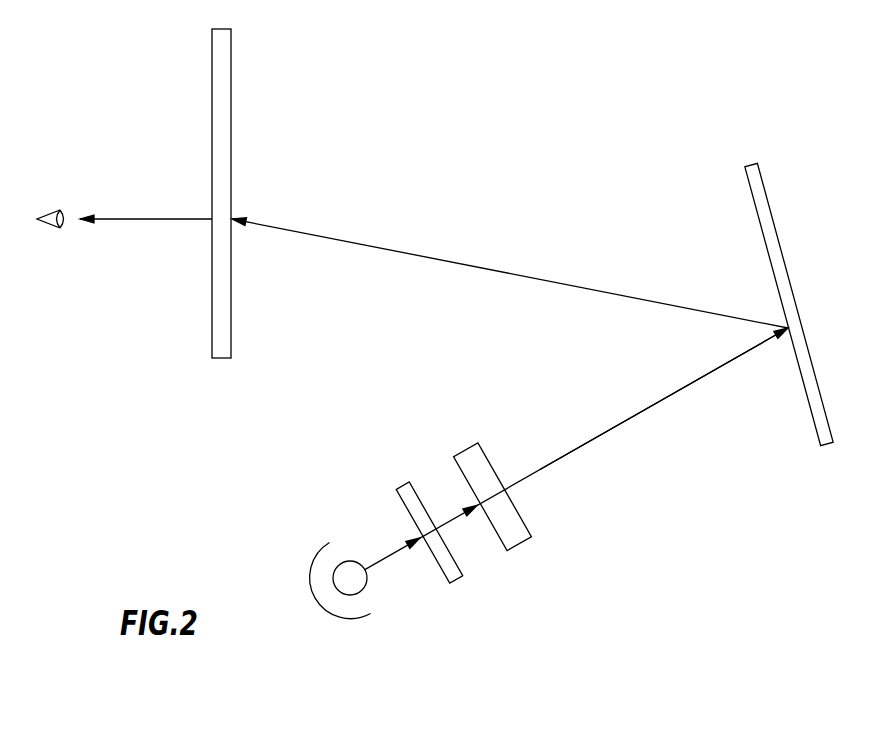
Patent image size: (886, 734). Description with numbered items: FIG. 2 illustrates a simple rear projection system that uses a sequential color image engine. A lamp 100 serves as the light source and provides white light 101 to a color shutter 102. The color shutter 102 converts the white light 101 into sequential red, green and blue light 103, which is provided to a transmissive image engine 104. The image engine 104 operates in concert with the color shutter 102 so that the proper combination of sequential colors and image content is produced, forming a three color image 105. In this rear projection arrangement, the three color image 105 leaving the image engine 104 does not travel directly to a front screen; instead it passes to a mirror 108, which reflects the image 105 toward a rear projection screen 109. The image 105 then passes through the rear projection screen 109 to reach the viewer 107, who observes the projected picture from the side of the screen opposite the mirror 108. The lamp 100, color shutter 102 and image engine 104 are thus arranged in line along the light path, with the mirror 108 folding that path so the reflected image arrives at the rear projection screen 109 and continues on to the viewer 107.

The lamp 100 is at (352, 622).
The white light 101 is at (397, 549).
The color shutter 102 is at (457, 582).
The sequential red, green and blue light 103 is at (448, 518).
The transmissive image engine 104 is at (523, 542).
The three color image 105 is at (617, 417).
The viewer 107 is at (45, 213).
The mirror 108 is at (828, 447).
The rear projection screen 109 is at (222, 358).